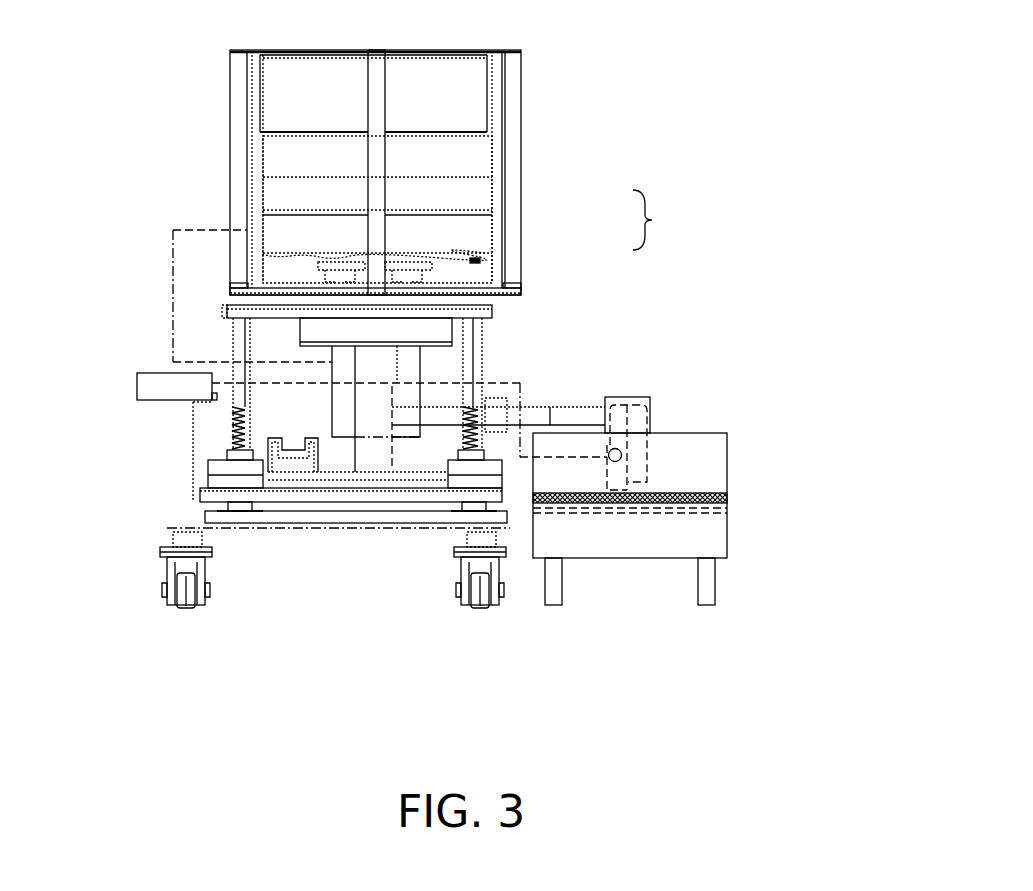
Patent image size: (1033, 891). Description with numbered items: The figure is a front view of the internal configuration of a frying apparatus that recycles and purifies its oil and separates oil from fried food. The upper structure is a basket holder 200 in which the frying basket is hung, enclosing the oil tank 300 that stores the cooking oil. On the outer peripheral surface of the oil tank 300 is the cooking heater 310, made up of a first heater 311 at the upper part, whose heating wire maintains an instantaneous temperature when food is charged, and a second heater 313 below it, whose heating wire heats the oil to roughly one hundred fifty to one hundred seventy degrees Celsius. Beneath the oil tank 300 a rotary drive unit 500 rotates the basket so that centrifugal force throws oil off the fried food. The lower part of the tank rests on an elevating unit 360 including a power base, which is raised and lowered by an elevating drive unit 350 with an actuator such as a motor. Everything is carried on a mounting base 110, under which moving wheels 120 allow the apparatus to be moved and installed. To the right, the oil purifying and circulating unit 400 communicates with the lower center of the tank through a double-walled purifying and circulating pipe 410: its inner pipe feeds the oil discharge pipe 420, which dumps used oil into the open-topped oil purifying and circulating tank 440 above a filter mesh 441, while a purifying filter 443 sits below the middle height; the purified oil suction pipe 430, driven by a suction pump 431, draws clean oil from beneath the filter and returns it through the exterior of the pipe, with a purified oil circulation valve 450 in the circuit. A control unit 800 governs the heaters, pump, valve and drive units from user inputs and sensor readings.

The mounting base 110 is at (292, 532).
The moving wheel 120 is at (183, 608).
The basket holder 200 is at (237, 68).
The oil tank 300 is at (450, 165).
The cooking heater 310 is at (668, 220).
The first heater 311 is at (465, 198).
The second heater 313 is at (465, 237).
The elevating drive unit 350 is at (287, 460).
The elevating unit 360 is at (240, 423).
The oil purifying and circulating unit 400 is at (688, 360).
The purifying and circulating pipe 410 is at (368, 445).
The oil discharge pipe 420 is at (640, 458).
The purified oil suction pipe 430 is at (650, 428).
The suction pump 431 is at (610, 462).
The oil purifying and circulating tank 440 is at (727, 540).
The filter mesh 441 is at (722, 490).
The purifying filter 443 is at (660, 514).
The purified oil circulation valve 450 is at (623, 397).
The rotary drive unit 500 is at (417, 362).
The control unit 800 is at (150, 373).